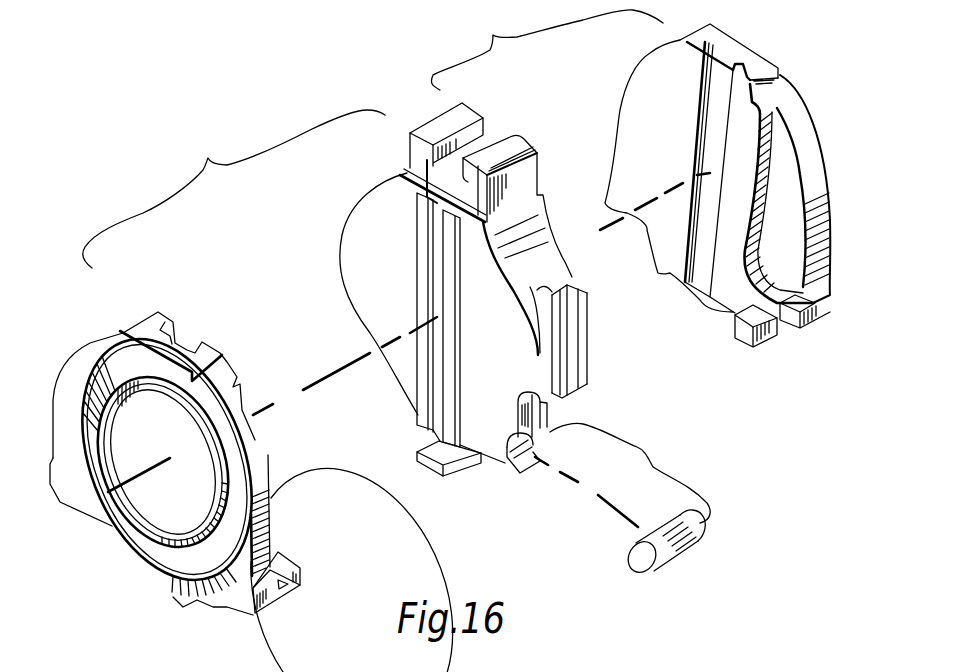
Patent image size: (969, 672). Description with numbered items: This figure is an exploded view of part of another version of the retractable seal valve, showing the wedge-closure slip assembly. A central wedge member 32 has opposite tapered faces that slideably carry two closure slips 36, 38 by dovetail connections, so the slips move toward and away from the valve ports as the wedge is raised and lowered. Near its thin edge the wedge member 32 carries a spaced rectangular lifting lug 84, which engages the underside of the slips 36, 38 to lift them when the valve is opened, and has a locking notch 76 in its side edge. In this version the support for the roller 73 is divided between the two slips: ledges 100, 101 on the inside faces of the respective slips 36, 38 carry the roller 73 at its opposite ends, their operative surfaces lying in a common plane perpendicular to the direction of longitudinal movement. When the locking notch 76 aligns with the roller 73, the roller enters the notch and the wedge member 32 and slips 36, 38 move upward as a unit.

The closure slip 36 is at (128, 540).
The ledge 100 is at (287, 560).
The wedge member 32 is at (348, 283).
The lifting lug 84 is at (428, 468).
The locking notch 76 is at (508, 462).
The roller 73 is at (638, 558).
The closure slip 38 is at (802, 115).
The ledge 101 is at (743, 333).